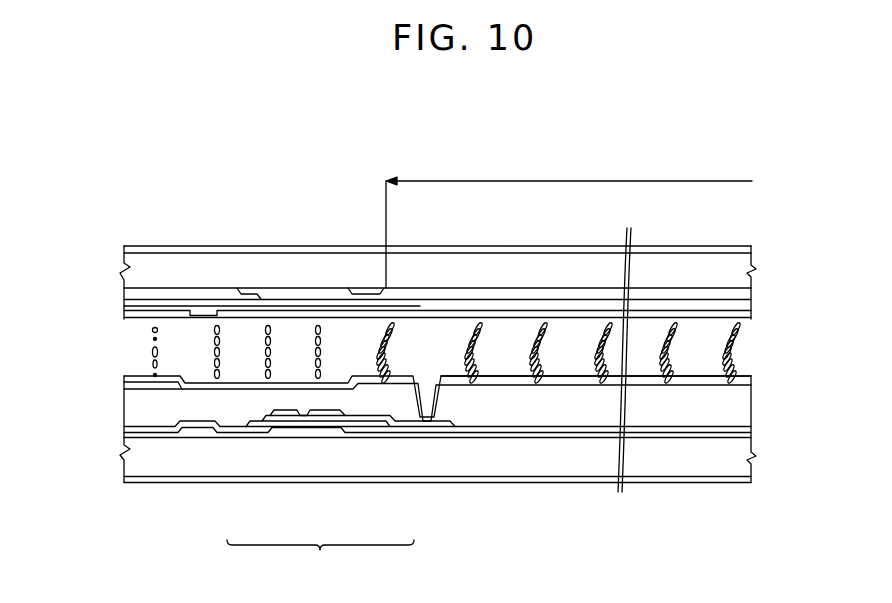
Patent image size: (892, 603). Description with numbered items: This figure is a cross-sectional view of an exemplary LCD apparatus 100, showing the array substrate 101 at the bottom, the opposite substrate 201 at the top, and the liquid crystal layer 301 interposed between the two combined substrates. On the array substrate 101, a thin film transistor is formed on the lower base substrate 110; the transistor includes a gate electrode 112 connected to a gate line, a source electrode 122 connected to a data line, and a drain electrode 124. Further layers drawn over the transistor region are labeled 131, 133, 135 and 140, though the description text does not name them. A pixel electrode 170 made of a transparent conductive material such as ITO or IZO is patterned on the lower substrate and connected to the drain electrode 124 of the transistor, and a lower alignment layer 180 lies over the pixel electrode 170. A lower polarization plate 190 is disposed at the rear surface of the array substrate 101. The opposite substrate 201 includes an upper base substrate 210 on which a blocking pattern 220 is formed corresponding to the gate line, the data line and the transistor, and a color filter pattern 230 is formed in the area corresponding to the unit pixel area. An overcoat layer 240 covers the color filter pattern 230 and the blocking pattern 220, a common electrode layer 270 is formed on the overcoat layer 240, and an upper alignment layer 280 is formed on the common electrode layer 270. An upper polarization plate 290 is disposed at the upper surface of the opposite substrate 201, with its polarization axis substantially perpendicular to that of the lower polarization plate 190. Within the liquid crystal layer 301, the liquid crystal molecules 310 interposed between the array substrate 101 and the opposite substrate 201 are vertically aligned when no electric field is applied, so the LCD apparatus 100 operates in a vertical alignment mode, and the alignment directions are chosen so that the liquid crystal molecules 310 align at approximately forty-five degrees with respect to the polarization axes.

The LCD apparatus 100 is at (226, 158).
The array substrate 101 is at (762, 381).
The first base substrate 110 is at (124, 455).
The gate electrode 112 is at (300, 438).
The source electrode 122 is at (282, 421).
The drain electrode 124 is at (327, 419).
The source electrode 131 is at (370, 438).
The drain electrode 133 is at (348, 432).
The passivation layer 135 is at (500, 434).
The organic layer 140 is at (543, 418).
The pixel electrode 170 is at (665, 391).
The lower alignment layer 180 is at (718, 385).
The lower polarization plate 190 is at (600, 484).
The opposite substrate 201 is at (762, 247).
The upper base substrate 210 is at (124, 286).
The blocking pattern 220 is at (305, 289).
The color filter pattern 230 is at (511, 296).
The overcoat layer 240 is at (568, 306).
The common electrode layer 270 is at (668, 313).
The upper alignment layer 280 is at (723, 313).
The upper polarization plate 290 is at (124, 246).
The liquid crystal layer 301 is at (762, 325).
The liquid crystal molecules 310 is at (152, 353).